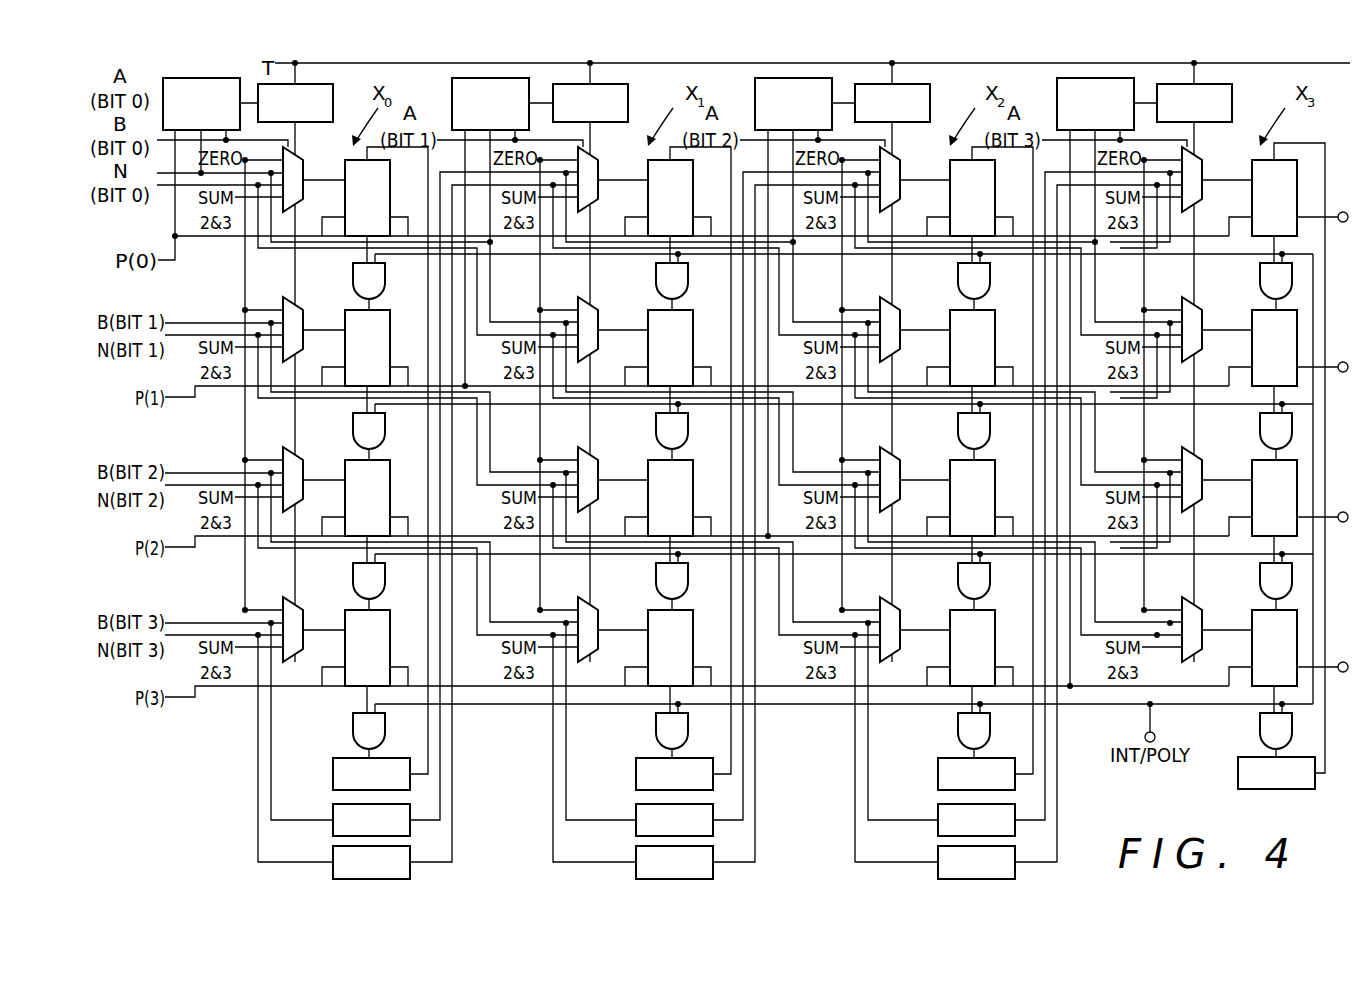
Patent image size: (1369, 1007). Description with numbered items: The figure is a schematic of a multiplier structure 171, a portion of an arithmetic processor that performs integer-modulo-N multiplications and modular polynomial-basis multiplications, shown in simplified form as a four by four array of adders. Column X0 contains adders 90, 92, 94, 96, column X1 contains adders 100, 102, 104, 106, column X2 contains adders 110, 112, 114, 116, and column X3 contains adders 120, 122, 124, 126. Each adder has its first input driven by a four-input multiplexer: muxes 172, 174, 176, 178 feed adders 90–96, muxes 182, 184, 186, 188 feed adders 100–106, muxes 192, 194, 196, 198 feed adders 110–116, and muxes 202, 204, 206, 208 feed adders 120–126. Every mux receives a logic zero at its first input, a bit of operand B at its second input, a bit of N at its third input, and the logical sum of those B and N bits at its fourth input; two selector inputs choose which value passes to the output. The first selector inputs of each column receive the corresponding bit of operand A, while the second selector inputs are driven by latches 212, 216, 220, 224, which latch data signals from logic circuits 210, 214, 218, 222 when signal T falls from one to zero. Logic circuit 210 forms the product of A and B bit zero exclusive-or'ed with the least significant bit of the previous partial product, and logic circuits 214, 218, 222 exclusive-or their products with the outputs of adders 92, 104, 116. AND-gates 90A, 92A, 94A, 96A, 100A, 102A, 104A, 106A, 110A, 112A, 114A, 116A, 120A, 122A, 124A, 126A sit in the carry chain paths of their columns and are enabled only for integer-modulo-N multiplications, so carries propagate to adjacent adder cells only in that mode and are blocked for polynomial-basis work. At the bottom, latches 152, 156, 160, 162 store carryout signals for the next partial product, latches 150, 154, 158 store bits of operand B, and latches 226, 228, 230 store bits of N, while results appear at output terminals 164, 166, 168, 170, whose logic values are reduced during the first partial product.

The adder 90 is at (390, 183).
The adder 92 is at (390, 333).
The adder 94 is at (390, 483).
The adder 96 is at (390, 633).
The adder 100 is at (693, 183).
The adder 102 is at (693, 333).
The adder 104 is at (693, 483).
The adder 106 is at (693, 633).
The adder 110 is at (995, 183).
The adder 112 is at (995, 333).
The adder 114 is at (995, 483).
The adder 116 is at (995, 633).
The adder 120 is at (1252, 202).
The adder 122 is at (1252, 352).
The adder 124 is at (1252, 502).
The adder 126 is at (1252, 652).
The AND-gate 90A is at (353, 273).
The AND-gate 92A is at (353, 423).
The AND-gate 94A is at (353, 573).
The AND-gate 96A is at (353, 723).
The AND-gate 100A is at (656, 273).
The AND-gate 102A is at (656, 423).
The AND-gate 104A is at (656, 573).
The AND-gate 106A is at (656, 723).
The AND-gate 110A is at (958, 273).
The AND-gate 112A is at (958, 423).
The AND-gate 114A is at (958, 573).
The AND-gate 116A is at (958, 723).
The AND-gate 120A is at (1260, 273).
The AND-gate 122A is at (1260, 423).
The AND-gate 124A is at (1260, 573).
The AND-gate 126A is at (1260, 723).
The latch 150 is at (333, 809).
The latch 152 is at (333, 764).
The latch 154 is at (636, 809).
The latch 156 is at (636, 764).
The latch 158 is at (938, 809).
The latch 160 is at (938, 764).
The latch 162 is at (1238, 775).
The output terminal 164 is at (1343, 212).
The output terminal 166 is at (1343, 362).
The output terminal 168 is at (1343, 512).
The output terminal 170 is at (1343, 662).
The multiplier structure 171 is at (1148, 799).
The multiplexer 172 is at (303, 163).
The multiplexer 174 is at (303, 313).
The multiplexer 176 is at (303, 463).
The multiplexer 178 is at (303, 613).
The multiplexer 182 is at (598, 163).
The multiplexer 184 is at (598, 313).
The multiplexer 186 is at (598, 463).
The multiplexer 188 is at (598, 613).
The multiplexer 192 is at (900, 163).
The multiplexer 194 is at (900, 313).
The multiplexer 196 is at (900, 463).
The multiplexer 198 is at (900, 613).
The multiplexer 202 is at (1202, 180).
The multiplexer 204 is at (1232, 300).
The multiplexer 206 is at (1232, 450).
The multiplexer 208 is at (1232, 600).
The logic circuit 210 is at (176, 78).
The logic circuit 214 is at (452, 100).
The logic circuit 218 is at (755, 100).
The logic circuit 222 is at (1057, 100).
The latch 212 is at (333, 103).
The latch 216 is at (628, 103).
The latch 220 is at (930, 103).
The latch 224 is at (1232, 103).
The latch 226 is at (333, 852).
The latch 228 is at (636, 852).
The latch 230 is at (938, 852).